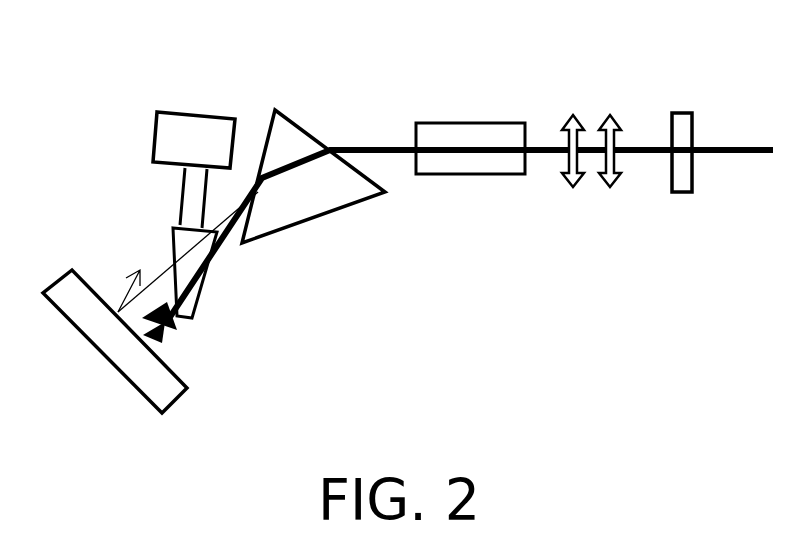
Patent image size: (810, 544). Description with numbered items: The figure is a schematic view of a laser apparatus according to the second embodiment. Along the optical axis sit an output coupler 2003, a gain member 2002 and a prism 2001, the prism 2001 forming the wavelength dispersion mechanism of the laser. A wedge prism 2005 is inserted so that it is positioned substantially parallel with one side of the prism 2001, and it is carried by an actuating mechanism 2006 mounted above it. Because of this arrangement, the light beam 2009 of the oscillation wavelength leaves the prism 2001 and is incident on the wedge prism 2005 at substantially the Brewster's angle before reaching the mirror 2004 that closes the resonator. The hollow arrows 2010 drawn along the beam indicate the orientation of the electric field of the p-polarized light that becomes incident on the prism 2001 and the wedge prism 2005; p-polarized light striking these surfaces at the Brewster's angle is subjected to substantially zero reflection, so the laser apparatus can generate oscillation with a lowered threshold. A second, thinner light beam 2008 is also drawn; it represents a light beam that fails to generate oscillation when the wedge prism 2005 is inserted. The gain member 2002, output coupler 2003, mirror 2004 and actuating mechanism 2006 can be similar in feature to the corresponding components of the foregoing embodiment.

The prism 2001 is at (293, 207).
The gain member 2002 is at (472, 163).
The output coupler 2003 is at (682, 170).
The mirror 2004 is at (153, 393).
The wedge prism 2005 is at (187, 242).
The actuating mechanism 2006 is at (215, 120).
The light beam 2008 is at (130, 270).
The light beam 2009 is at (170, 337).
The hollow arrows 2010 is at (590, 133).